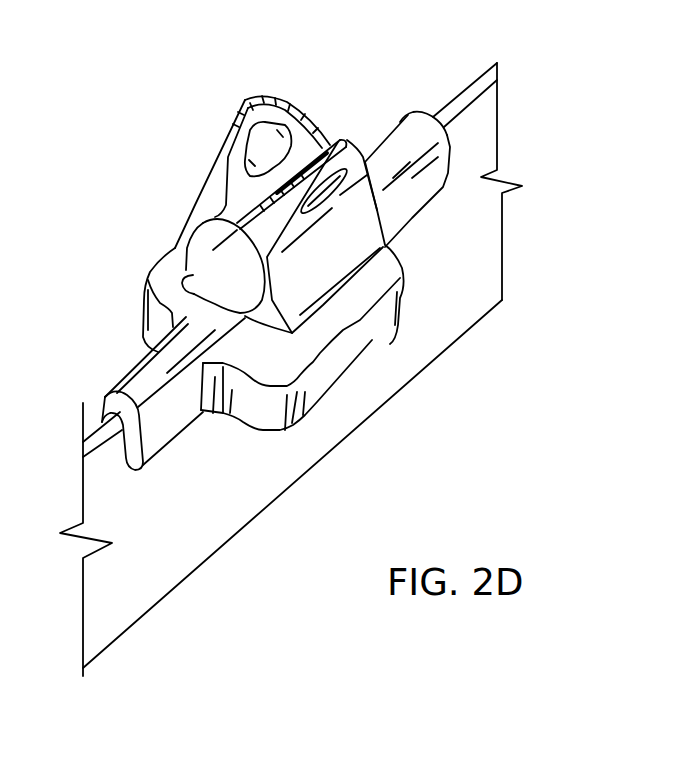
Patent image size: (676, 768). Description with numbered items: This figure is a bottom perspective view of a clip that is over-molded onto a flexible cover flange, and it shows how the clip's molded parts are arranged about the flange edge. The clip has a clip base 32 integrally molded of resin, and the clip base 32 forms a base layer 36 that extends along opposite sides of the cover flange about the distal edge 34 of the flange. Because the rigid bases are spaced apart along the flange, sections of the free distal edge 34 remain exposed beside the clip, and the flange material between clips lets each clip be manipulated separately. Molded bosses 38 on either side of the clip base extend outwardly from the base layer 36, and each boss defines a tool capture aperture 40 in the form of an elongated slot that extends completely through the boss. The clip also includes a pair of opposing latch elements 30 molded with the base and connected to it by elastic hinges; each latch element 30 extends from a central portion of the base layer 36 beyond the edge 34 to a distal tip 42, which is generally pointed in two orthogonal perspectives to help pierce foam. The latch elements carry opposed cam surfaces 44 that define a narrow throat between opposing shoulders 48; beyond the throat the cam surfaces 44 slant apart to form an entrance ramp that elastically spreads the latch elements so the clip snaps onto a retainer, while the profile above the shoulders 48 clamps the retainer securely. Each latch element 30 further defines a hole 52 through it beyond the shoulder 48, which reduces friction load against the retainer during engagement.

The latch element 30 is at (267, 242).
The clip base 32 is at (423, 122).
The distal edge 34 is at (472, 79).
The base layer 36 is at (398, 127).
The molded boss 38 is at (403, 438).
The tool capture aperture 40 is at (368, 482).
The distal tip 42 is at (245, 98).
The cam surface 44 is at (254, 181).
The shoulder 48 is at (330, 138).
The hole 52 is at (232, 144).